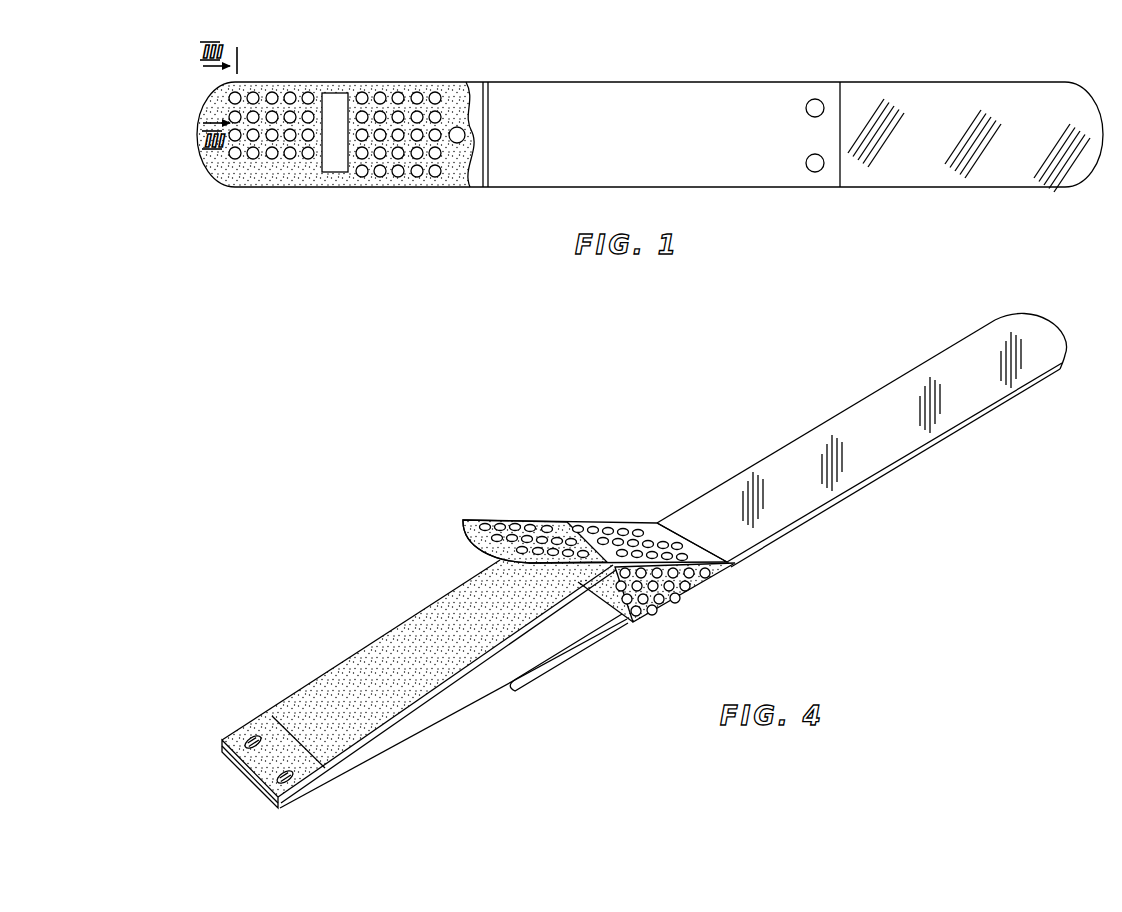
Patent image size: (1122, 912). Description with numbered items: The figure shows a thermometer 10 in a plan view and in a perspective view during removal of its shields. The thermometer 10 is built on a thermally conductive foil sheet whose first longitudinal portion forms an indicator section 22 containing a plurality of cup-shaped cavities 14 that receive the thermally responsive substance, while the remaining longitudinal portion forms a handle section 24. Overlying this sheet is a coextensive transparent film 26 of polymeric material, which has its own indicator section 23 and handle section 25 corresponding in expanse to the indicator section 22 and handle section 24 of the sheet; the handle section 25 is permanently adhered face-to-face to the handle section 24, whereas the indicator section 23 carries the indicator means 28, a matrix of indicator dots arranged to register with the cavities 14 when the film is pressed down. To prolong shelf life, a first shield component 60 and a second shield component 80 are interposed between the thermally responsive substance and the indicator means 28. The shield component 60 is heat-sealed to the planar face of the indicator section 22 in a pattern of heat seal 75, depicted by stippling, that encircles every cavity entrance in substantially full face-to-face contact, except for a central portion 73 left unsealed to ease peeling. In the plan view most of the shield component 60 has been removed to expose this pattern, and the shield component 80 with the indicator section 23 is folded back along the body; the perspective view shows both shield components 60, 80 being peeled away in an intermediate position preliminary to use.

In FIG. 1, the thermometer 10 is at (553, 191).
In FIG. 4, the thermometer 10 is at (661, 499).
In FIG. 1, the cup-shaped cavities 14 is at (437, 91).
In FIG. 4, the cup-shaped cavities 14 is at (661, 590).
In FIG. 1, the indicator section 22 is at (427, 186).
In FIG. 4, the indicator section 22 is at (661, 617).
In FIG. 4, the indicator section 23 is at (567, 530).
In FIG. 1, the handle section 24 is at (925, 168).
In FIG. 4, the handle section 24 is at (778, 514).
In FIG. 1, the handle section 25 is at (890, 100).
In FIG. 4, the handle section 25 is at (782, 466).
In FIG. 1, the transparent film 26 is at (1037, 117).
In FIG. 4, the transparent film 26 is at (880, 422).
In FIG. 4, the indicator means 28 is at (631, 536).
In FIG. 4, the first shield component 60 is at (461, 717).
In FIG. 1, the central unsealed portion 73 is at (333, 110).
In FIG. 1, the pattern of heat seal 75 is at (390, 167).
In FIG. 1, the shield component 80 is at (644, 80).
In FIG. 4, the shield component 80 is at (341, 660).